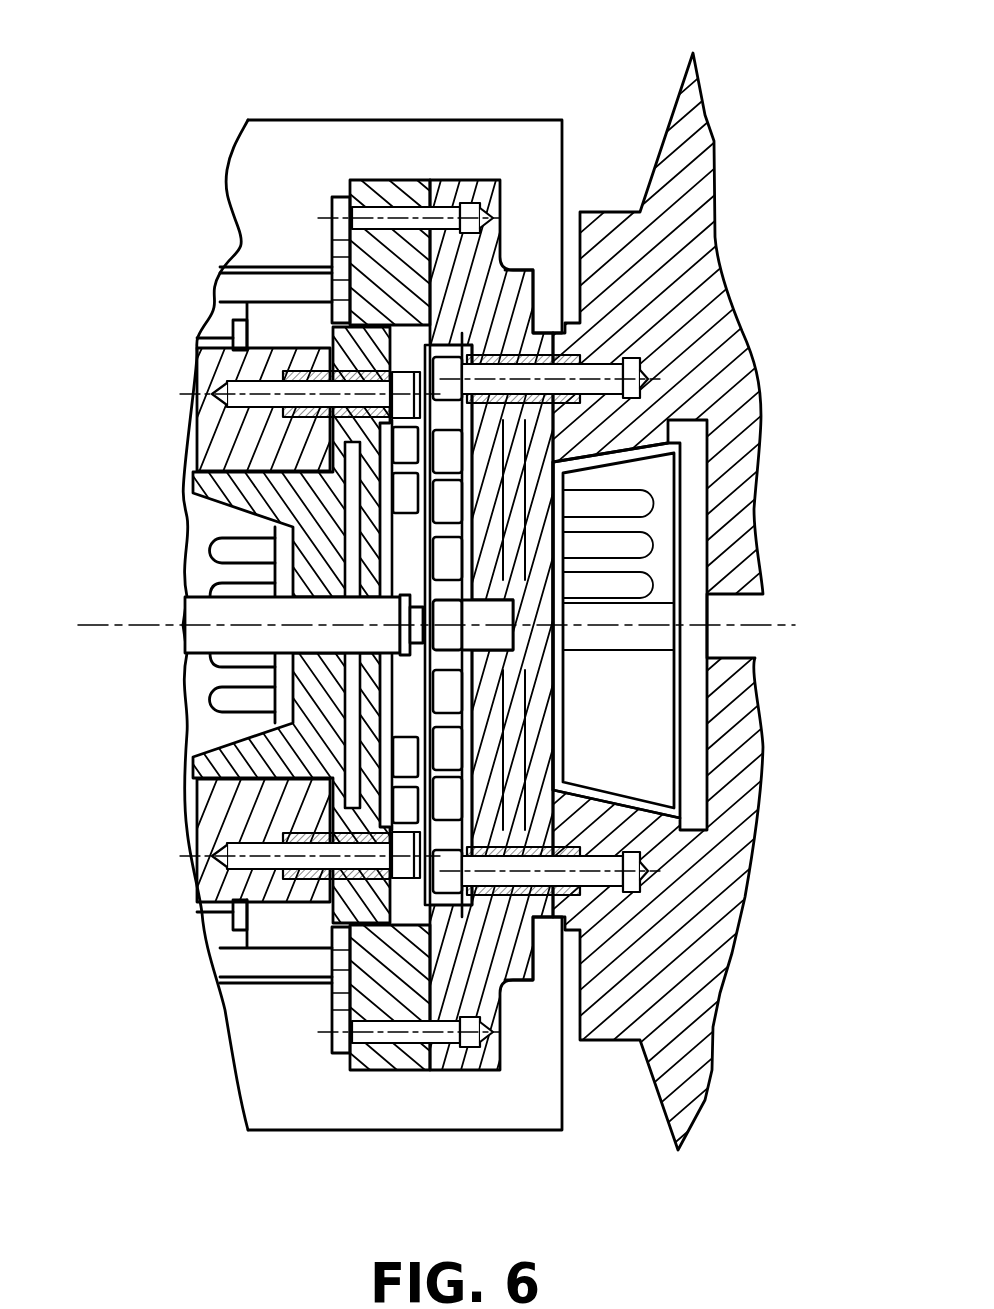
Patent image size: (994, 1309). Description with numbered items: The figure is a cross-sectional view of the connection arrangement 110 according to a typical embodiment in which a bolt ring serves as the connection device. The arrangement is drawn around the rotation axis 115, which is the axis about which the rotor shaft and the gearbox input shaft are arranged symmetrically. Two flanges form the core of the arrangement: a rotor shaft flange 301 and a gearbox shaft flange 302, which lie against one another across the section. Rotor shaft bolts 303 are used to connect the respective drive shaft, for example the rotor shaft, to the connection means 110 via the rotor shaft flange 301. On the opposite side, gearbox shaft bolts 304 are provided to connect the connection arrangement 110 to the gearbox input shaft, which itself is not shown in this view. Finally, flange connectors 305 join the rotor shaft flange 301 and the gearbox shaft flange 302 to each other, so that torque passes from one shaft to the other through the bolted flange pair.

The connection arrangement 110 is at (585, 34).
The rotation axis 115 is at (150, 628).
The rotor shaft flange 301 is at (405, 312).
The gearbox shaft flange 302 is at (468, 258).
The rotor shaft bolts 303 is at (300, 394).
The gearbox shaft bolts 304 is at (540, 372).
The flange connectors 305 is at (345, 207).